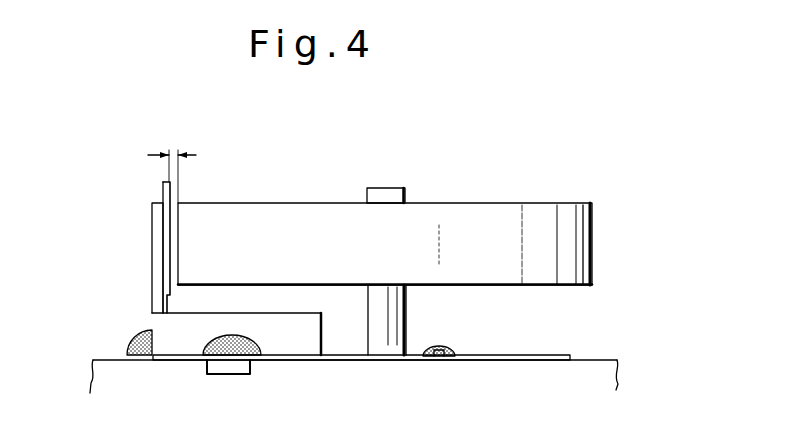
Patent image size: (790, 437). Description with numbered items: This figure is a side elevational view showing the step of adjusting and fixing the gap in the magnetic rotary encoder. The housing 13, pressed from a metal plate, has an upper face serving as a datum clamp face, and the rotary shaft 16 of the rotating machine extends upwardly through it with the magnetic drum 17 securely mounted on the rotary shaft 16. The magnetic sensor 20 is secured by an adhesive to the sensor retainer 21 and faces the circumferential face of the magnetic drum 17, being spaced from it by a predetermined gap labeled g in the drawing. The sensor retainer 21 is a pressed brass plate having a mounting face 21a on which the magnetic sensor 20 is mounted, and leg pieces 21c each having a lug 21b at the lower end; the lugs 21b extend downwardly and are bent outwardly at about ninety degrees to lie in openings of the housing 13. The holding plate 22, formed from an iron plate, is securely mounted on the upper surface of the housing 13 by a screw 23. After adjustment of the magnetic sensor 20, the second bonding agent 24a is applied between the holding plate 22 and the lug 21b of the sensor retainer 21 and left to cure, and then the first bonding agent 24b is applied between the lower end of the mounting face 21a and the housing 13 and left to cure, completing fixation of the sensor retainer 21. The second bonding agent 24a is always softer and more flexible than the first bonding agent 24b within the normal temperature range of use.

The housing 13 is at (596, 360).
The rotary shaft 16 is at (395, 197).
The magnetic drum 17 is at (541, 222).
The magnetic sensor 20 is at (162, 191).
The sensor retainer 21 is at (215, 311).
The mounting face 21a is at (152, 237).
The lug 21b is at (237, 368).
The leg piece 21c is at (302, 338).
The holding plate 22 is at (520, 355).
The screw 23 is at (447, 350).
The second bonding agent 24a is at (205, 337).
The first bonding agent 24b is at (140, 341).
The gap g is at (182, 172).